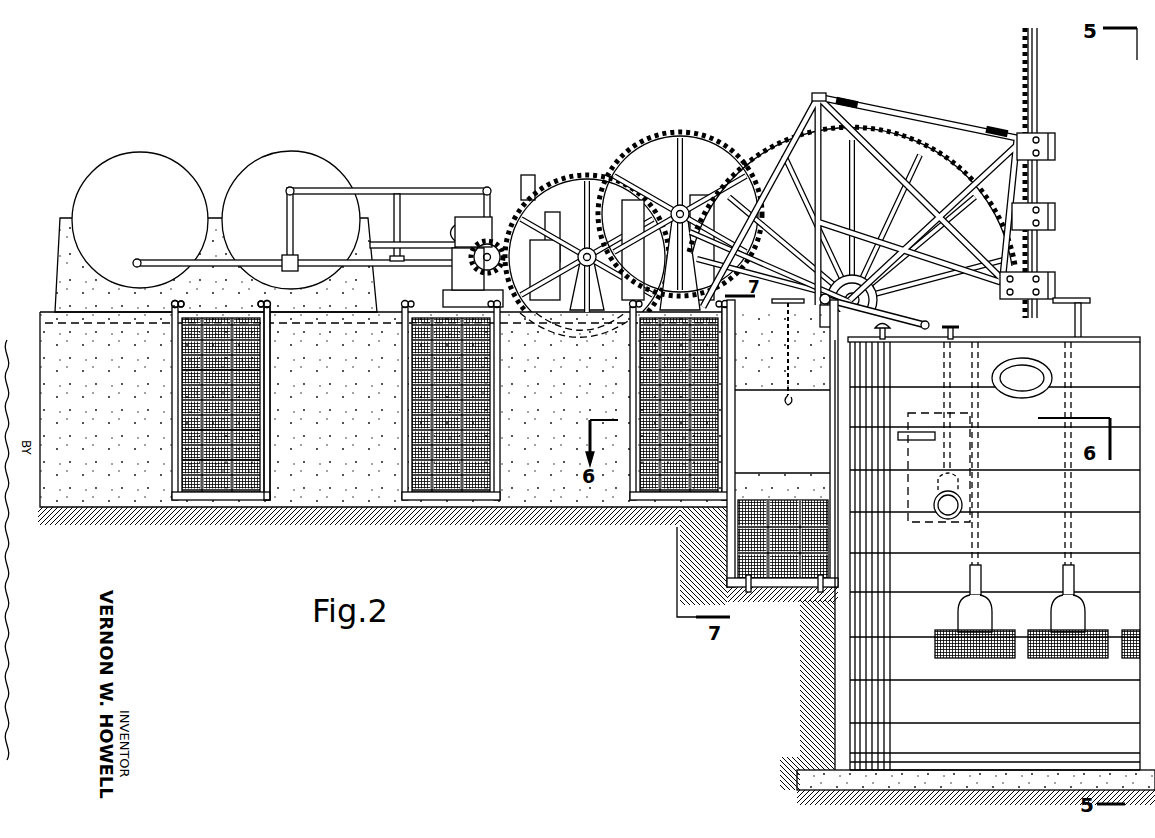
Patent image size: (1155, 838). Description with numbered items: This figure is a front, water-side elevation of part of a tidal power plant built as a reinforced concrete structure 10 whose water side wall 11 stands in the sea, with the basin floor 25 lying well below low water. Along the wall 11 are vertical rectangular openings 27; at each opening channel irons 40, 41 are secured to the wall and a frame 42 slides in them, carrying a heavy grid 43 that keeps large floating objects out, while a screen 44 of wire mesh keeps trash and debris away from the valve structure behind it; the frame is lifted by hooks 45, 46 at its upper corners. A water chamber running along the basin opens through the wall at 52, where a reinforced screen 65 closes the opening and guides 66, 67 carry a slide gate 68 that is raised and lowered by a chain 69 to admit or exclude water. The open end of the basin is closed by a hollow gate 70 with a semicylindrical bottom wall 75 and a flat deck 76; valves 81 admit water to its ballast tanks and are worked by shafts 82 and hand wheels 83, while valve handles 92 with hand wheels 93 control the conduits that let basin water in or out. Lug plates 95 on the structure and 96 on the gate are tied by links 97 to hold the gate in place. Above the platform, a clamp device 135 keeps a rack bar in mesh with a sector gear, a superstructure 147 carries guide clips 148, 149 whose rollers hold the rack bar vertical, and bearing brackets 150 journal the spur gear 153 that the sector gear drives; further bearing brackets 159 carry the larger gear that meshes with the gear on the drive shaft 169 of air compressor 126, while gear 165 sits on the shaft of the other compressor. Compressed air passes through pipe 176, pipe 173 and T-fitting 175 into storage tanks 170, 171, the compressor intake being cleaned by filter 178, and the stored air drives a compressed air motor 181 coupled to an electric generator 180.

The reinforced concrete structure 10 is at (40, 316).
The water side wall 11 is at (68, 365).
The basin bottom wall 25 is at (924, 782).
The opening 27 is at (262, 456).
The channel iron 40 is at (628, 380).
The channel iron 41 is at (272, 345).
The frame 42 is at (235, 318).
The grid 43 is at (262, 387).
The screen 44 is at (262, 426).
The hook 45 is at (187, 305).
The hook 46 is at (272, 304).
The chamber opening 52 is at (760, 597).
The reinforced screen 65 is at (788, 578).
The guide 66 is at (743, 387).
The guide 67 is at (833, 393).
The slide gate 68 is at (766, 401).
The chain 69 is at (780, 330).
The gate 70 is at (846, 710).
The bottom wall 75 is at (1015, 759).
The top wall or deck 76 is at (1118, 343).
The valve 81 is at (963, 504).
The valve-operating shaft 82 is at (1013, 399).
The hand wheel 83 is at (953, 331).
The valve handle 92 is at (1082, 326).
The hand wheel 93 is at (1080, 300).
The lug plate 95 is at (834, 321).
The lug plate 96 is at (921, 338).
The link 97 is at (892, 318).
The air compressor 126 is at (458, 225).
The clamp device 135 is at (1057, 282).
The superstructure 147 is at (968, 180).
The guide clip 148 is at (1058, 216).
The guide clip 149 is at (1058, 148).
The bearing bracket 150 is at (711, 225).
The spur gear 153 is at (696, 195).
The bearing brackets 159 is at (584, 315).
The gear 165 is at (468, 259).
The drive shaft 169 is at (480, 260).
The compressed air storage tank 170 is at (146, 164).
The compressed air storage tank 171 is at (305, 166).
The compressed air pipe 173 is at (170, 258).
The T-fitting 175 is at (296, 256).
The pipe 176 is at (391, 187).
The air filter and cleaner 178 is at (524, 178).
The electric current generator 180 is at (645, 186).
The compressed air motor 181 is at (548, 212).